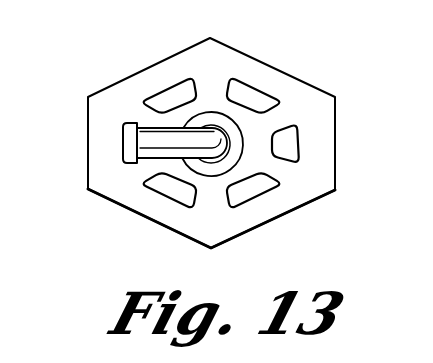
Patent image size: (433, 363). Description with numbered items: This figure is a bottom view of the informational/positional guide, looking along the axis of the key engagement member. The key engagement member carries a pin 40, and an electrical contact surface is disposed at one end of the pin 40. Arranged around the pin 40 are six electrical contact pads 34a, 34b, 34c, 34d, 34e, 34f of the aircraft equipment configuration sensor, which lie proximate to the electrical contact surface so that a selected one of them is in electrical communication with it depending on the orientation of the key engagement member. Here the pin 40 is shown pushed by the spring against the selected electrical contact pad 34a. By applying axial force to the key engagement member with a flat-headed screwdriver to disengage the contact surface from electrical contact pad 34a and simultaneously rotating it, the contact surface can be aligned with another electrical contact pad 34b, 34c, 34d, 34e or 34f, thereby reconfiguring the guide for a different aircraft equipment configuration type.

The electrical contact pad 34a is at (131, 139).
The electrical contact pad 34b is at (170, 190).
The electrical contact pad 34c is at (253, 190).
The electrical contact pad 34d is at (293, 143).
The electrical contact pad 34e is at (252, 95).
The electrical contact pad 34f is at (170, 95).
The pin 40 is at (197, 138).